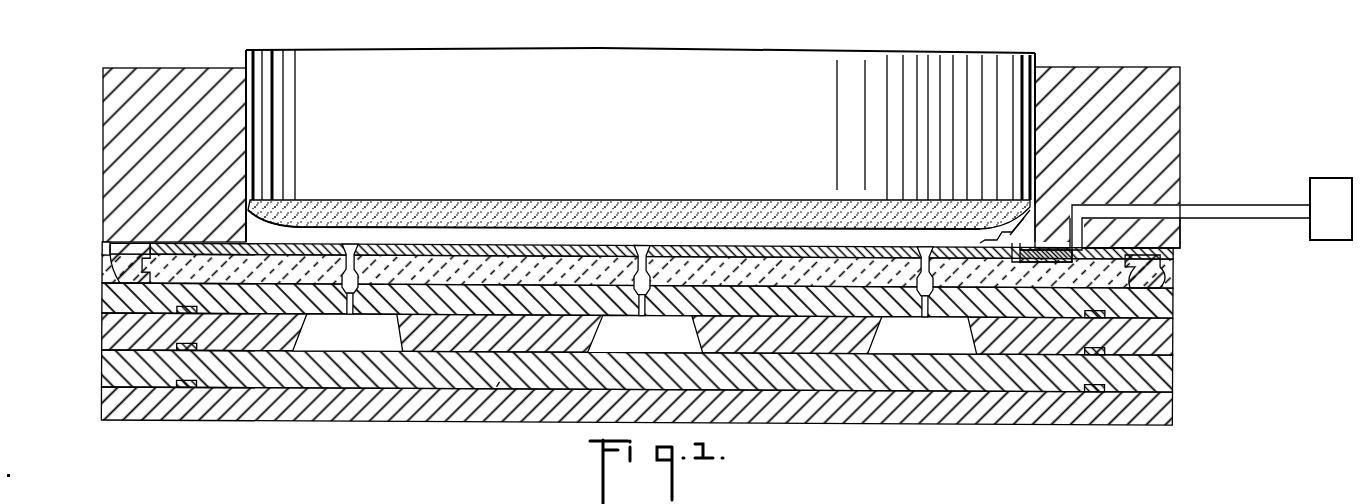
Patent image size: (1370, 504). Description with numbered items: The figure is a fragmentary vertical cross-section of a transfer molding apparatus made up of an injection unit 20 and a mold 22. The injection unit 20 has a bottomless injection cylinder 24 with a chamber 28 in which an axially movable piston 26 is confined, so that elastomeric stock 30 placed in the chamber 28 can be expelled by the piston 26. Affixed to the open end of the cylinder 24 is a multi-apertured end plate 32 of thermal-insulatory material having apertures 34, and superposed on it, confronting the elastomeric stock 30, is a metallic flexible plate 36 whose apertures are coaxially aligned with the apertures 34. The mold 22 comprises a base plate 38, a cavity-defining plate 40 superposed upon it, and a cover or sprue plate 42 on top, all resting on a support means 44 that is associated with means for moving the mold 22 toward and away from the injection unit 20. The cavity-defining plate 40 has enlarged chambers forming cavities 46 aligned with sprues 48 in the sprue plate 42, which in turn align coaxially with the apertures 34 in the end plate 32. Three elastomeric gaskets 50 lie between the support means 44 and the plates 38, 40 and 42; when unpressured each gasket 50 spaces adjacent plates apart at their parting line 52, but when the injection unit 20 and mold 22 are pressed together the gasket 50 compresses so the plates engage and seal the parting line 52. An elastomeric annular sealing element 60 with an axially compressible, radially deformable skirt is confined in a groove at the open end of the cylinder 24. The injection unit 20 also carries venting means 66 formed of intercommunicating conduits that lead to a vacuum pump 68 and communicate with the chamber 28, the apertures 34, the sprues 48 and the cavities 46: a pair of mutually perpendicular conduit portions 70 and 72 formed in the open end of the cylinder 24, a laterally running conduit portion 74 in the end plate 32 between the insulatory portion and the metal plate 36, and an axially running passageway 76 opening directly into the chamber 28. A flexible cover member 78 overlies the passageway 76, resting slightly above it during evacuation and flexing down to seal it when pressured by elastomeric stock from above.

The injection unit 20 is at (90, 160).
The mold 22 is at (92, 343).
The injection cylinder 24 is at (164, 78).
The piston 26 is at (612, 107).
The chamber 28 is at (243, 220).
The elastomeric stock 30 is at (597, 212).
The end plate 32 is at (514, 250).
The apertures 34 is at (359, 270).
The flexible plate 36 is at (850, 262).
The base plate 38 is at (1178, 372).
The cavity-defining plate 40 is at (1178, 338).
The sprue plate 42 is at (1178, 308).
The support means 44 is at (1178, 410).
The cavities 46 is at (368, 349).
The sprues 48 is at (345, 300).
The elastomeric gaskets 50 is at (190, 380).
The parting line 52 is at (498, 385).
The sealing element 60 is at (108, 258).
The venting means 66 is at (1100, 205).
The pump 68 is at (1330, 192).
The conduit portion 70 is at (1072, 232).
The conduit portion 72 is at (1140, 205).
The laterally running conduit portion 74 is at (1046, 268).
The passageway 76 is at (975, 275).
The flexible cover member 78 is at (1033, 210).